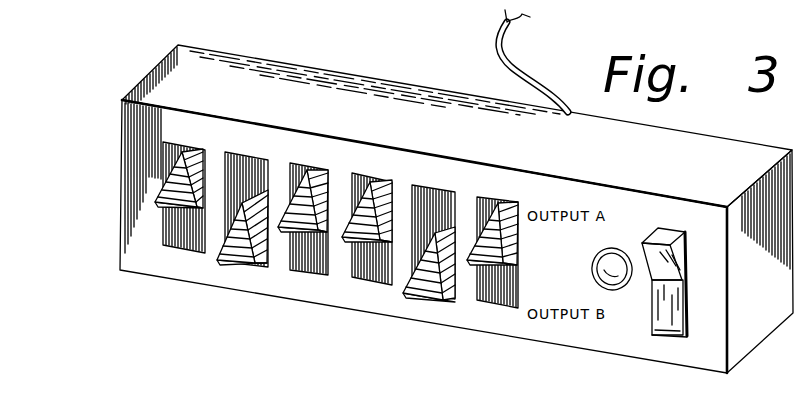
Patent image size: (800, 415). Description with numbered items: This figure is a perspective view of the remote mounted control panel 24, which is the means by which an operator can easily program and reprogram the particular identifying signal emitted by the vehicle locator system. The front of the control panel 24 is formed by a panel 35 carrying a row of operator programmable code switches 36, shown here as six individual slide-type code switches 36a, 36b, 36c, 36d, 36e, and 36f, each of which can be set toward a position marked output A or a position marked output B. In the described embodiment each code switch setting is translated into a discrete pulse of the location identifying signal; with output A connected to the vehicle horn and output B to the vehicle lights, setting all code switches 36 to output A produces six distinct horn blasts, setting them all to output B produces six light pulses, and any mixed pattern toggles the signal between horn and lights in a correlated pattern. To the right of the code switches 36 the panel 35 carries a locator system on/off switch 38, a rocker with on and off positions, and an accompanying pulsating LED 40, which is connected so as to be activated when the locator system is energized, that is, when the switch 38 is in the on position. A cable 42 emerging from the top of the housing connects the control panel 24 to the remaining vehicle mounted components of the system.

The control panel 24 is at (139, 83).
The panel 35 is at (150, 168).
The operator programmable code switches 36 is at (182, 152).
The code switch 36a is at (173, 205).
The code switch 36b is at (235, 263).
The code switch 36c is at (287, 235).
The code switch 36d is at (345, 243).
The code switch 36e is at (423, 297).
The code switch 36f is at (468, 263).
The locator system on/off switch 38 is at (651, 337).
The pulsating LED 40 is at (623, 252).
The cable 42 is at (537, 68).